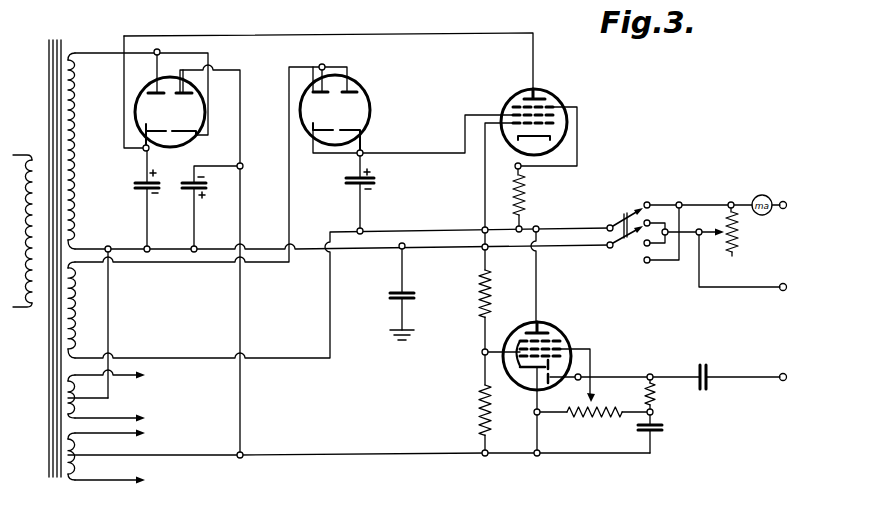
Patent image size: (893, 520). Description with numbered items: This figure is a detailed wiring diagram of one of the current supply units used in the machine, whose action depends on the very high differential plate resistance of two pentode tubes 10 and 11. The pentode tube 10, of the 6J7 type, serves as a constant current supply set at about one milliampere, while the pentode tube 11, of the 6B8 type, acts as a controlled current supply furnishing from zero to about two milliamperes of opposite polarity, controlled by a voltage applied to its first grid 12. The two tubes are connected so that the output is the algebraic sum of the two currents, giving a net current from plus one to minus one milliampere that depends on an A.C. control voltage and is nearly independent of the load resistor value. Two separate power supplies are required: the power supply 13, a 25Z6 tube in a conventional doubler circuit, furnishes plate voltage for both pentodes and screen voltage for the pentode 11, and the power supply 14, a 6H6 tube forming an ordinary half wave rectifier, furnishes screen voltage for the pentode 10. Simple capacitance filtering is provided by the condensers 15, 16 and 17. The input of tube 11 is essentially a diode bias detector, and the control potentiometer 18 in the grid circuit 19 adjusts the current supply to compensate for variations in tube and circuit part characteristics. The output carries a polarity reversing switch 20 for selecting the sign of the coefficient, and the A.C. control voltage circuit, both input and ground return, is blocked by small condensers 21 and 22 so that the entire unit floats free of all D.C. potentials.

The pentode tube 10 is at (563, 97).
The pentode tube 11 is at (556, 322).
The first grid 12 is at (572, 341).
The power supply 13 is at (145, 90).
The power supply 14 is at (367, 95).
The condenser 15 is at (137, 180).
The condenser 16 is at (205, 188).
The condenser 17 is at (374, 184).
The control potentiometer 18 is at (602, 402).
The grid circuit 19 is at (593, 370).
The polarity reversing switch 20 is at (632, 203).
The condenser 21 is at (714, 369).
The condenser 22 is at (410, 297).